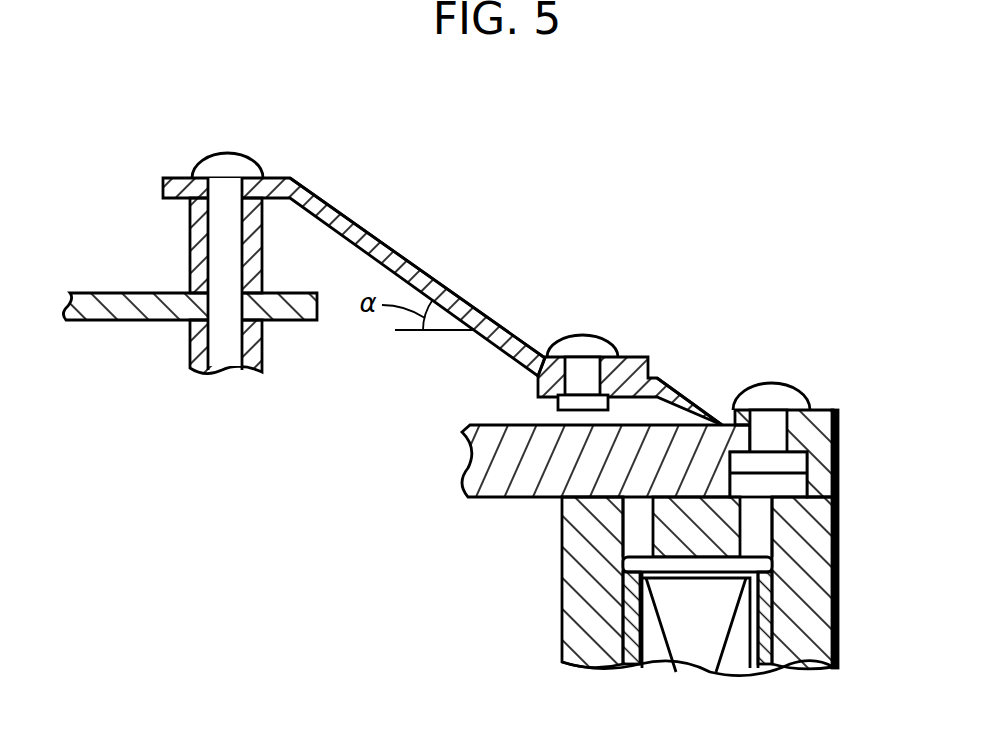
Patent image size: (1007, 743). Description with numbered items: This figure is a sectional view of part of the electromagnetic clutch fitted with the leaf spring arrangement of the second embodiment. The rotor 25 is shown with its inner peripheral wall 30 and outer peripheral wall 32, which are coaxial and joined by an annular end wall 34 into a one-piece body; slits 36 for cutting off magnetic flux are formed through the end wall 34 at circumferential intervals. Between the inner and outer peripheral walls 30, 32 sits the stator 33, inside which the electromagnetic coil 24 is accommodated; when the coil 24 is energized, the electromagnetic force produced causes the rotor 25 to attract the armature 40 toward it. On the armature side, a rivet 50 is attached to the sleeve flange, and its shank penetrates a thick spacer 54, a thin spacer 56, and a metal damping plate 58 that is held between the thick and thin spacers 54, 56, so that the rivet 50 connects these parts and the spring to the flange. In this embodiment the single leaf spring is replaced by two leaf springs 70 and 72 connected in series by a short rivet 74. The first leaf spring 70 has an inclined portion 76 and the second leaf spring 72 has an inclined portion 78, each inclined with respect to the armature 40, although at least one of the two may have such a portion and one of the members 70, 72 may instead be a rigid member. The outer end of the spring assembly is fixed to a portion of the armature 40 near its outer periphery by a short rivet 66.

The rivet 50 is at (225, 160).
The thick spacer 54 is at (190, 228).
The thin spacer 56 is at (203, 358).
The damping plate 58 is at (103, 313).
The leaf spring 70 is at (380, 250).
The inclined portion 76 is at (466, 297).
The short rivet 74 is at (588, 338).
The leaf spring 72 is at (676, 390).
The inclined portion 78 is at (710, 411).
The short rivet 66 is at (773, 390).
The armature 40 is at (509, 494).
The slits 36 is at (757, 543).
The inner peripheral wall 30 is at (568, 620).
The rotor 25 is at (852, 616).
The stator 33 is at (633, 640).
The annular end wall 34 is at (693, 540).
The electromagnetic coil 24 is at (735, 648).
The outer peripheral wall 32 is at (800, 648).